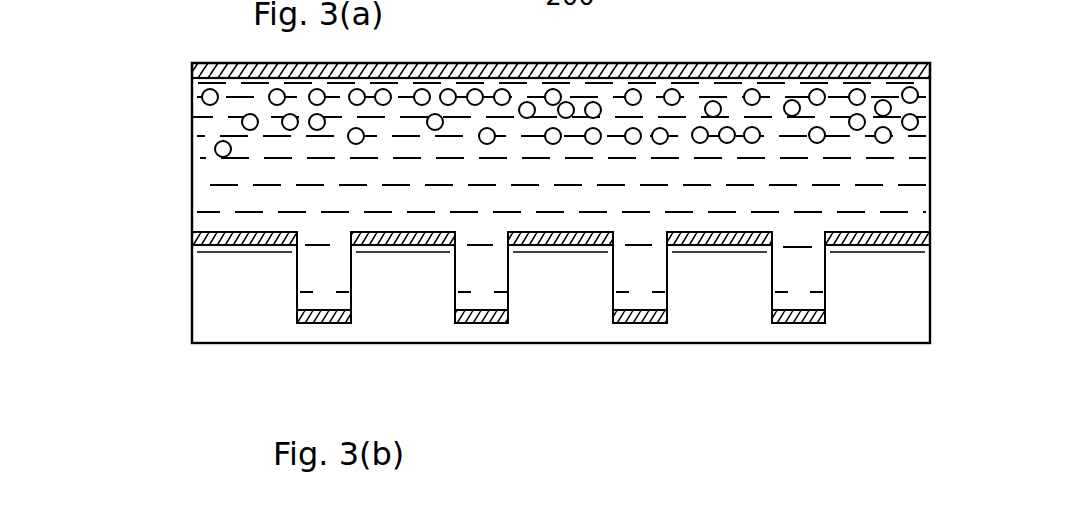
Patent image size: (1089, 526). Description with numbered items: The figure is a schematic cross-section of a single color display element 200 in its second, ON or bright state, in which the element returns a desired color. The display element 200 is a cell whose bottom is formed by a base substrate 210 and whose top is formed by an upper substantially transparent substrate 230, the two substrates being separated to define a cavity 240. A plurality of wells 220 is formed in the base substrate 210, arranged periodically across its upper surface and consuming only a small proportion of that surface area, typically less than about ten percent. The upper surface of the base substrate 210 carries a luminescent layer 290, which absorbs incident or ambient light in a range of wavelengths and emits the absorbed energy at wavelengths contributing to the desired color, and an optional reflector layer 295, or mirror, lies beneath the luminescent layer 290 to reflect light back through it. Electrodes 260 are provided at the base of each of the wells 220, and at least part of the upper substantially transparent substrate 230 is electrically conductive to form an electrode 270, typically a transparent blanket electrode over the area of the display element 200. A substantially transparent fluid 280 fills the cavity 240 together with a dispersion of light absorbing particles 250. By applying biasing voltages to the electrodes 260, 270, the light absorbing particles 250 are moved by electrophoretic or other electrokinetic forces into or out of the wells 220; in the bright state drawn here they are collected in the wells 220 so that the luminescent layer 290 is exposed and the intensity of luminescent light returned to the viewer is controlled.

The display element 200 is at (124, 105).
The base substrate 210 is at (908, 300).
The wells 220 is at (799, 243).
The upper substantially transparent substrate 230 is at (922, 84).
The cavity 240 is at (220, 188).
The light absorbing particles 250 is at (826, 95).
The electrodes 260 is at (316, 313).
The electrode 270 is at (880, 68).
The substantially transparent fluid 280 is at (912, 155).
The luminescent layer 290 is at (193, 242).
The reflector layer 295 is at (242, 252).